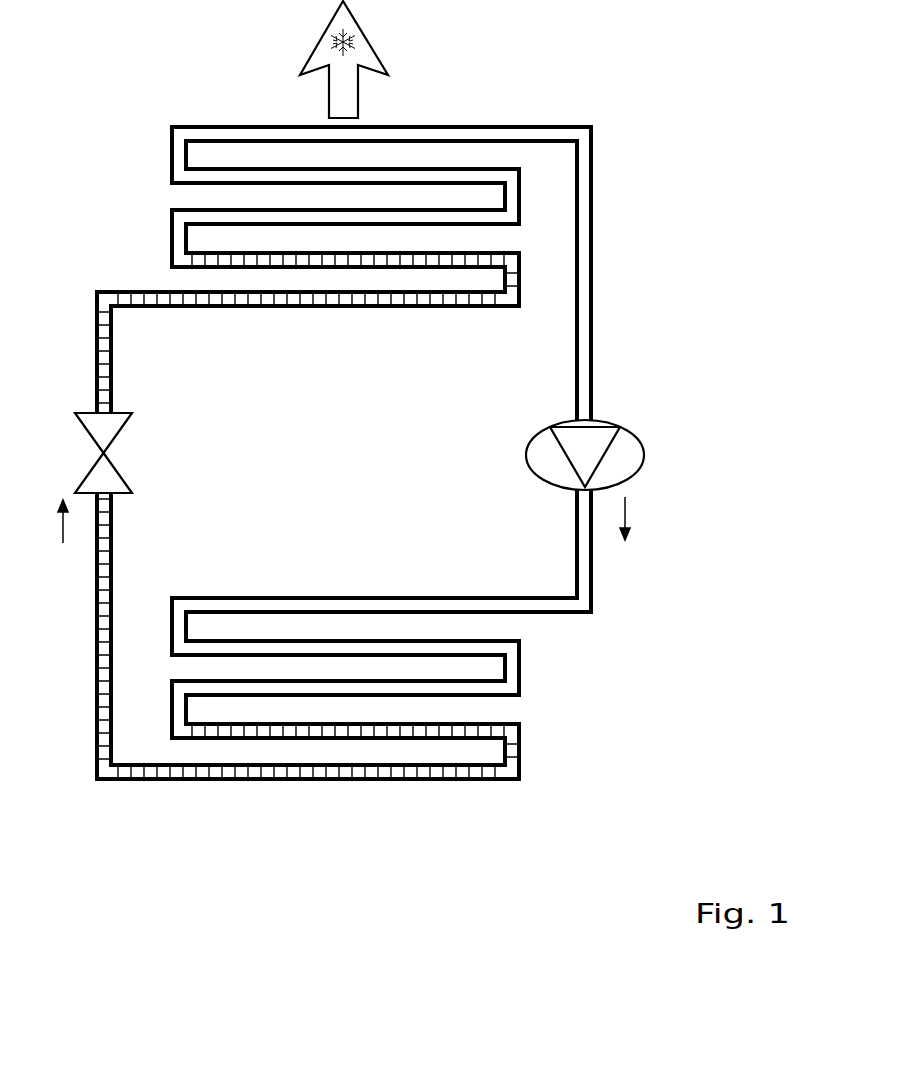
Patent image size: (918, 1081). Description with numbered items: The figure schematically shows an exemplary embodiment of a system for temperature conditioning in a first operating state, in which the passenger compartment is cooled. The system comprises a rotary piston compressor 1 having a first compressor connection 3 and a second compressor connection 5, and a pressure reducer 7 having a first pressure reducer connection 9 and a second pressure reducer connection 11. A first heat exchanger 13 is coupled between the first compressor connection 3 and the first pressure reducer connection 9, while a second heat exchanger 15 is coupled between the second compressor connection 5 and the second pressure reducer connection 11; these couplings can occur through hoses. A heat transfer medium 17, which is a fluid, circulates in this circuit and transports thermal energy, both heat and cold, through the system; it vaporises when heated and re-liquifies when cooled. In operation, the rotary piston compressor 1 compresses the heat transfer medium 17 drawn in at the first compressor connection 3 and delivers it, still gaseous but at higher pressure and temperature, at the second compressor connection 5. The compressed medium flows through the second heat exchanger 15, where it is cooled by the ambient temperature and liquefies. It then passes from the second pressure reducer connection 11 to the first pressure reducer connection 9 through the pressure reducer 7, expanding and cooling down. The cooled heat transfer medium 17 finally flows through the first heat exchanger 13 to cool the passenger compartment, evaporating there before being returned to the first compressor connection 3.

The rotary piston compressor 1 is at (632, 425).
The first compressor connection 3 is at (592, 420).
The second compressor connection 5 is at (577, 492).
The pressure reducer 7 is at (117, 470).
The first pressure reducer connection 9 is at (112, 410).
The second pressure reducer connection 11 is at (110, 495).
The first heat exchanger 13 is at (170, 160).
The second heat exchanger 15 is at (519, 667).
The heat transfer medium 17 is at (583, 180).